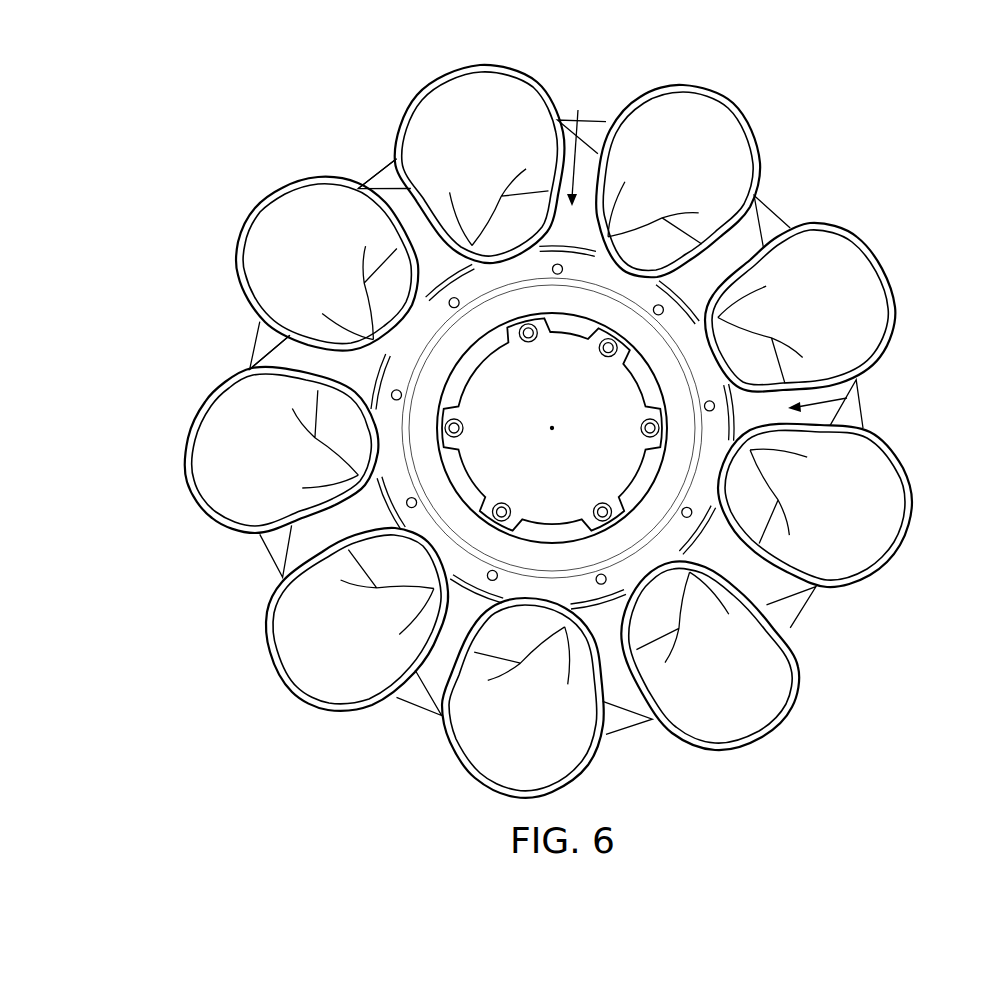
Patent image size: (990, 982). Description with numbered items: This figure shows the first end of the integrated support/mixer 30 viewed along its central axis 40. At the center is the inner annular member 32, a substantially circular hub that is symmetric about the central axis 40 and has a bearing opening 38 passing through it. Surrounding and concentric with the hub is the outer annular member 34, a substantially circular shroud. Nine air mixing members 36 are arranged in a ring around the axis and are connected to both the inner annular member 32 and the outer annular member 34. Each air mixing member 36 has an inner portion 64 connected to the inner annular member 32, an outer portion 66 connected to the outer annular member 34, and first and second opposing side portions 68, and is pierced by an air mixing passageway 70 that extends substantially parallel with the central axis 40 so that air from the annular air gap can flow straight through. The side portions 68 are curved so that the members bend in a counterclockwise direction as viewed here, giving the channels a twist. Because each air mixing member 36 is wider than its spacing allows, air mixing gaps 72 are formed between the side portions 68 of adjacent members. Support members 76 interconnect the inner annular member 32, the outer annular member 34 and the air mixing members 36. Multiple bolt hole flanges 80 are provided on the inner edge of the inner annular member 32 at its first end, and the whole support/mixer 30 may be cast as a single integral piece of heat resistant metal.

The support/mixer 30 is at (203, 140).
The inner annular member 32 is at (523, 587).
The outer annular member 34 is at (258, 349).
The air mixing members 36 is at (489, 385).
The bearing opening 38 is at (608, 414).
The central axis 40 is at (552, 428).
The inner portion 64 is at (628, 283).
The outer portion 66 is at (900, 268).
The side portions 68 is at (795, 588).
The air mixing passageway 70 is at (278, 236).
The air mixing gaps 72 is at (598, 170).
The support members 76 is at (370, 502).
The bolt hole flanges 80 is at (502, 504).